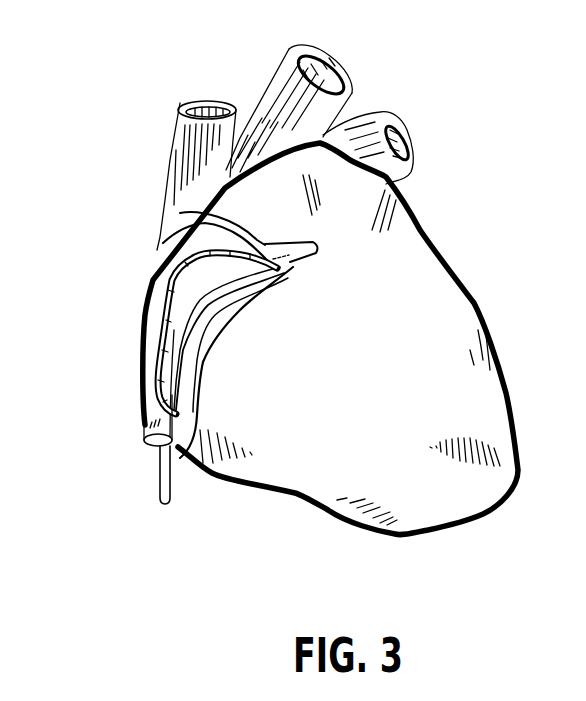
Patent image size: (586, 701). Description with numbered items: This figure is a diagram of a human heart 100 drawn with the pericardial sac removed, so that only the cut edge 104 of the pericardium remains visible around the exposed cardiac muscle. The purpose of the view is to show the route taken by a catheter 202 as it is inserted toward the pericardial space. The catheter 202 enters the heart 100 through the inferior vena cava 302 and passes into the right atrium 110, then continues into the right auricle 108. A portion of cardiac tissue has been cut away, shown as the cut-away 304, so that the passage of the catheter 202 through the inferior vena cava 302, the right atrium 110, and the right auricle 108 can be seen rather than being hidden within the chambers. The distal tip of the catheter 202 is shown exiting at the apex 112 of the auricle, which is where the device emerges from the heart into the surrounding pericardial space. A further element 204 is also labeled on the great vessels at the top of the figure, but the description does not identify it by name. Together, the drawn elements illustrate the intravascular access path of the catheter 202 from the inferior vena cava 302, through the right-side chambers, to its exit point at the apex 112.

The heart 100 is at (124, 138).
The cut edge of pericardium 104 is at (473, 308).
The right auricle 108 is at (180, 213).
The right atrium 110 is at (193, 295).
The apex 112 is at (281, 245).
The catheter 202 is at (170, 500).
The superior vena cava 204 is at (198, 100).
The inferior vena cava 302 is at (147, 448).
The cut-away portion of cardiac tissue 304 is at (160, 346).